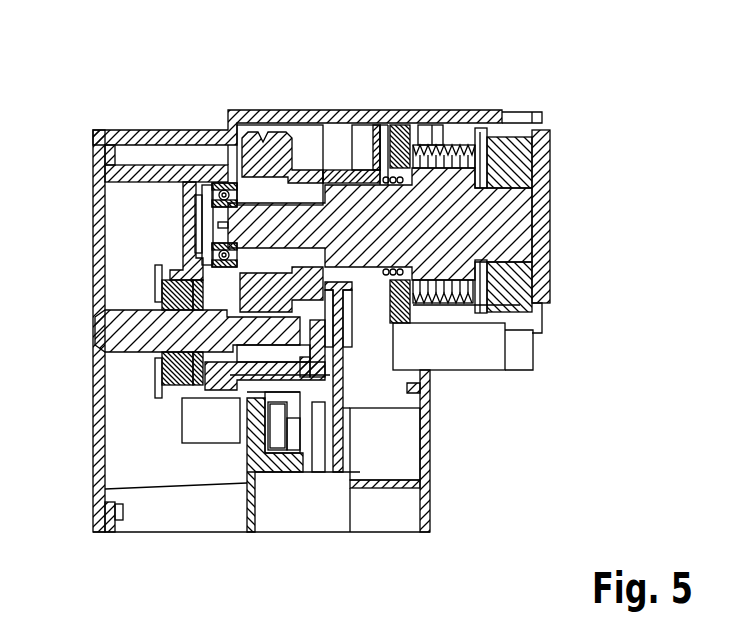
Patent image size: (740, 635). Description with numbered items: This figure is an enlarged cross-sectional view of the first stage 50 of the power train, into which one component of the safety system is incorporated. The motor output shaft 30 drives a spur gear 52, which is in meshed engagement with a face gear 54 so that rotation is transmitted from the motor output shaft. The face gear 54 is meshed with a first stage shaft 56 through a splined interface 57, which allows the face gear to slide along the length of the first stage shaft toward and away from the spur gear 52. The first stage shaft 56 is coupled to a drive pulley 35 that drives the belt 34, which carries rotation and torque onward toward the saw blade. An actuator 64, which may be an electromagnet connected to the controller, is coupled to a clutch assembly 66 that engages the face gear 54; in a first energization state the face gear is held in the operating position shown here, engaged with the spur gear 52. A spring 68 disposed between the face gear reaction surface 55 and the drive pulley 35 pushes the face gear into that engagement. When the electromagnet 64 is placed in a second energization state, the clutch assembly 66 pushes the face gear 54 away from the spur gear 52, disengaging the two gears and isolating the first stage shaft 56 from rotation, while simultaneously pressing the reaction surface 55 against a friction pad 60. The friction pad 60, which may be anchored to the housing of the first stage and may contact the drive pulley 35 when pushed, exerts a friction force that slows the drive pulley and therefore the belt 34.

The motor output shaft 30 is at (117, 330).
The belt 34 is at (452, 130).
The drive pulley 35 is at (485, 135).
The first stage 50 is at (480, 430).
The spur gear 52 is at (260, 148).
The face gear 54 is at (347, 182).
The face gear reaction surface 55 is at (400, 185).
The first stage shaft 56 is at (515, 218).
The splined interface 57 is at (334, 182).
The friction pad 60 is at (413, 313).
The actuator 64 is at (245, 458).
The clutch assembly 66 is at (337, 468).
The spring 68 is at (411, 165).